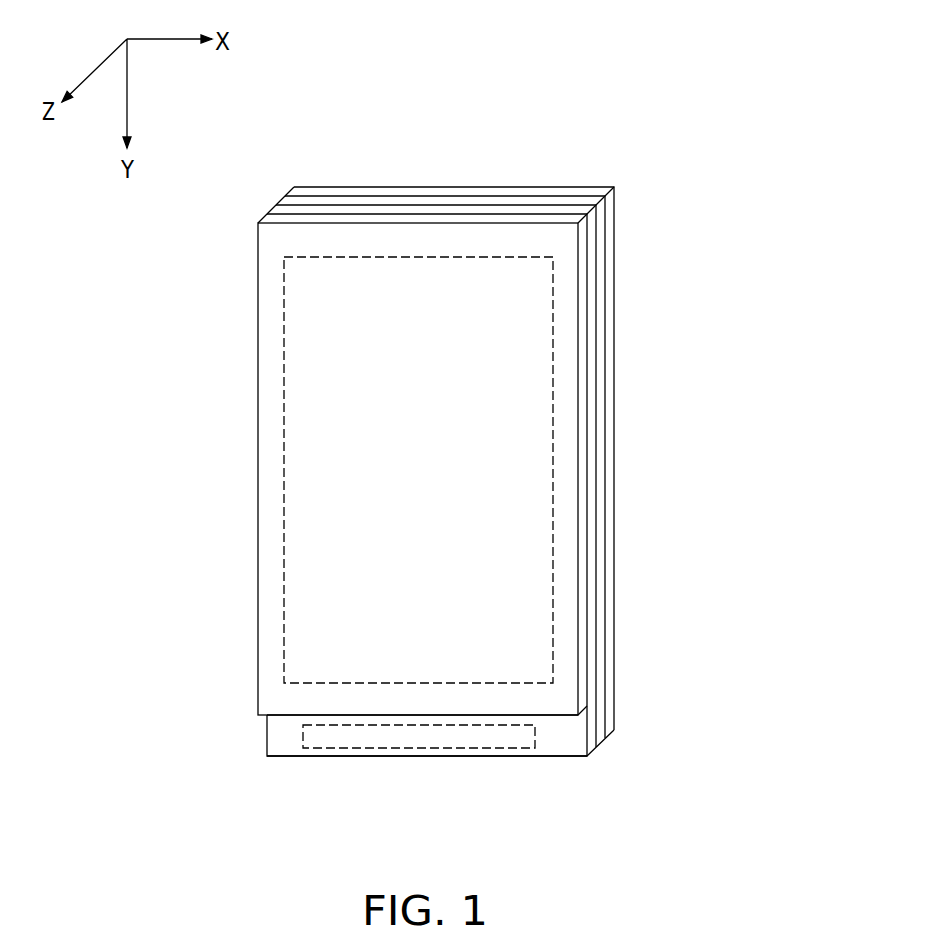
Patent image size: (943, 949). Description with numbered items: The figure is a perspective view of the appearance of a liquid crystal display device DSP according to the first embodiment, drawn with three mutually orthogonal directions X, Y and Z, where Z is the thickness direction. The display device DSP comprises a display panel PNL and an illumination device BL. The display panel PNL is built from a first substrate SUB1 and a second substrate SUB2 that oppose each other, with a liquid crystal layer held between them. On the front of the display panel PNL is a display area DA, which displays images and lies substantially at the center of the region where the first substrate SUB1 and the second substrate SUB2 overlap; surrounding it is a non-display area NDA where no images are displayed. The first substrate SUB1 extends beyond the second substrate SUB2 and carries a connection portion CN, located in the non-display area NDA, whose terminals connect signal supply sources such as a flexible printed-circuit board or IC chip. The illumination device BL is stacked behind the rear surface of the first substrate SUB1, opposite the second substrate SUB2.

The liquid crystal display device DSP is at (441, 458).
The display panel PNL is at (430, 488).
The illumination device BL is at (615, 333).
The first substrate SUB1 is at (467, 520).
The second substrate SUB2 is at (383, 500).
The display area DA is at (272, 475).
The non-display area NDA is at (421, 775).
The connection portion CN is at (421, 742).